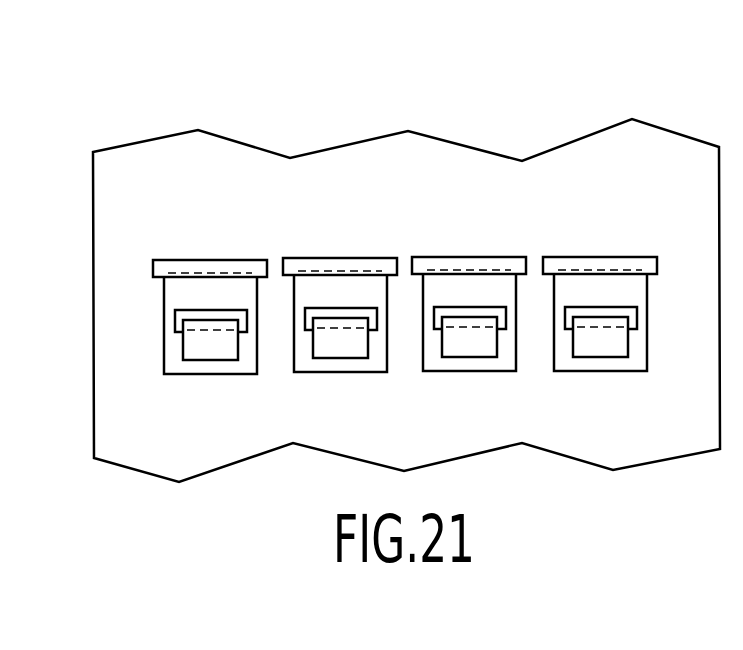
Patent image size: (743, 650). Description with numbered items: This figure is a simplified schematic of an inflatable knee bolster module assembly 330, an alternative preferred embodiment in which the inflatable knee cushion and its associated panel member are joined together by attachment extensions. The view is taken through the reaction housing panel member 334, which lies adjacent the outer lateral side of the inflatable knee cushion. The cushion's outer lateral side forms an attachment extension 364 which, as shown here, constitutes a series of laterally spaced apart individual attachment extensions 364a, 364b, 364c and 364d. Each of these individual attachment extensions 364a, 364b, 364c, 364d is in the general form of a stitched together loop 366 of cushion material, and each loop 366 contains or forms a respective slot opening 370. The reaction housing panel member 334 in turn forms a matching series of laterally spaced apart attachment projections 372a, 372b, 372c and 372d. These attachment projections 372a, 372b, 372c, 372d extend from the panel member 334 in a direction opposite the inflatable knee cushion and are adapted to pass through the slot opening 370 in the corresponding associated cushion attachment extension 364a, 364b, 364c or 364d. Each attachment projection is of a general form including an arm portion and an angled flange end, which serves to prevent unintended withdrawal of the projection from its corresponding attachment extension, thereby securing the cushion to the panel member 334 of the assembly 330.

The inflatable knee bolster module assembly 330 is at (410, 92).
The reaction housing panel member 334 is at (675, 150).
The attachment extension 364 is at (137, 393).
The attachment extension 364a is at (250, 362).
The attachment extension 364b is at (380, 360).
The attachment extension 364c is at (509, 359).
The attachment extension 364d is at (640, 359).
The stitched together loop 366 is at (178, 289).
The slot opening 370 is at (175, 260).
The attachment projection 372a is at (212, 342).
The attachment projection 372b is at (342, 340).
The attachment projection 372c is at (471, 339).
The attachment projection 372d is at (602, 339).